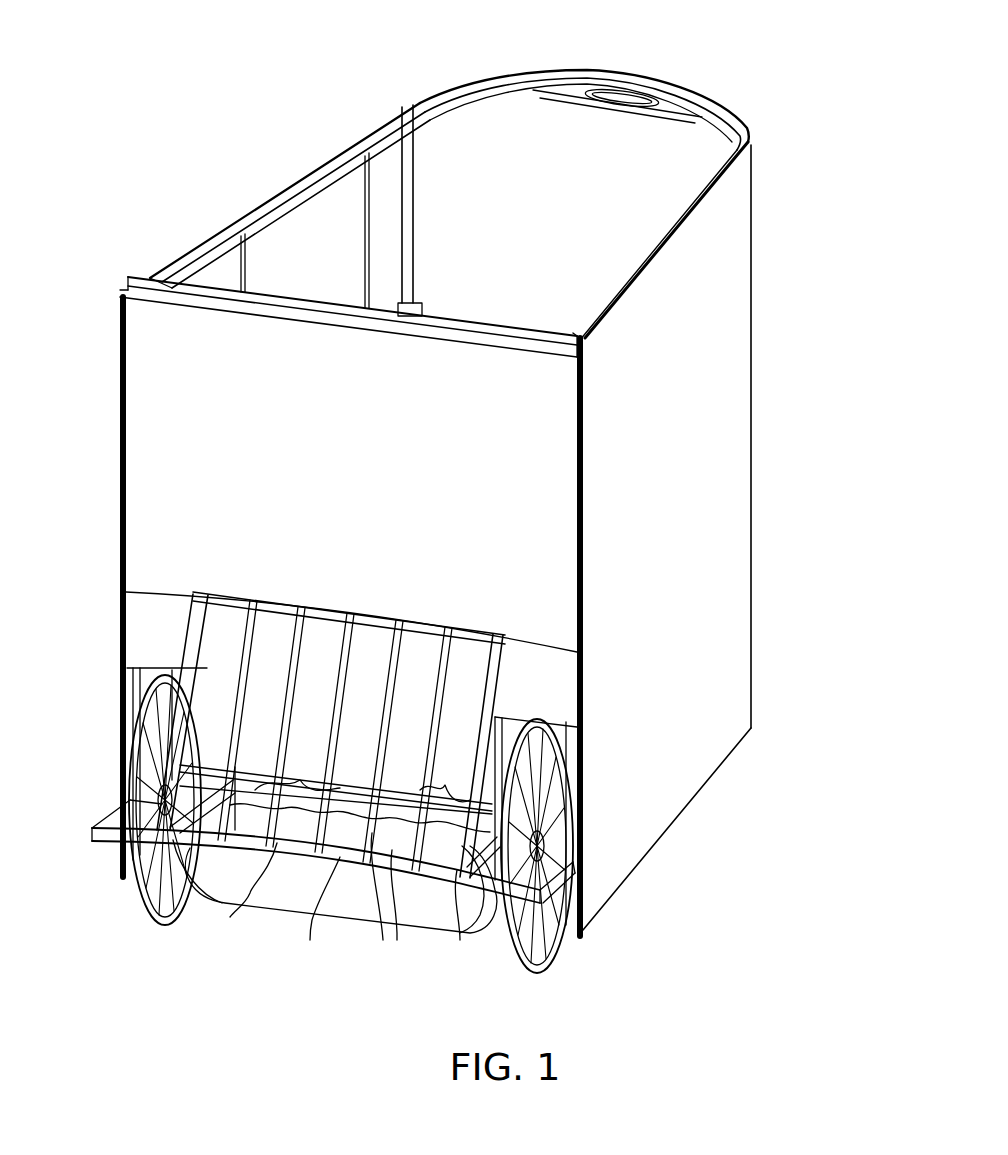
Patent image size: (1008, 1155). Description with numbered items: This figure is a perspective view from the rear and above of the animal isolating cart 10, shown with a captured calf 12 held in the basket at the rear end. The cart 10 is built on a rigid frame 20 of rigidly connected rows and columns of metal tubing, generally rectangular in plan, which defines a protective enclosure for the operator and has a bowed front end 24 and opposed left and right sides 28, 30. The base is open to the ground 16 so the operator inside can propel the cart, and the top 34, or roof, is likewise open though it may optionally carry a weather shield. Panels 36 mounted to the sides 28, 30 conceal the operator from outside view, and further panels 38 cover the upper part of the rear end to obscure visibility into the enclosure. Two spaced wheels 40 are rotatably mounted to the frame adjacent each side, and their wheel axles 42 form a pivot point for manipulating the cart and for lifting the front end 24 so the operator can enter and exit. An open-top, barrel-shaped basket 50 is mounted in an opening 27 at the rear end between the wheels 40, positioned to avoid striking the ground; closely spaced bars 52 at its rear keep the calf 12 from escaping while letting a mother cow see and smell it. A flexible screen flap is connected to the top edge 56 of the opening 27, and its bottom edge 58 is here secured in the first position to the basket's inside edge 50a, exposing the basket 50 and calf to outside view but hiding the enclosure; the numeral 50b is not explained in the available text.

The cart 10 is at (175, 80).
The calf 12 is at (445, 845).
The ground 16 is at (768, 938).
The rigid frame 20 is at (412, 113).
The bowed front end 24 is at (425, 88).
The opening 27 is at (275, 638).
The left side 28 is at (207, 222).
The right side 30 is at (772, 265).
The top 34 is at (690, 150).
The panels 36 is at (648, 564).
The panels 38 is at (318, 509).
The wheels 40 is at (152, 897).
The wheel axles 42 is at (533, 835).
The basket 50 is at (428, 902).
The inside edge 50a is at (347, 842).
The bale end 50b is at (282, 852).
The bars 52 is at (412, 842).
The top edge 56 is at (418, 662).
The bottom edge 58 is at (395, 795).